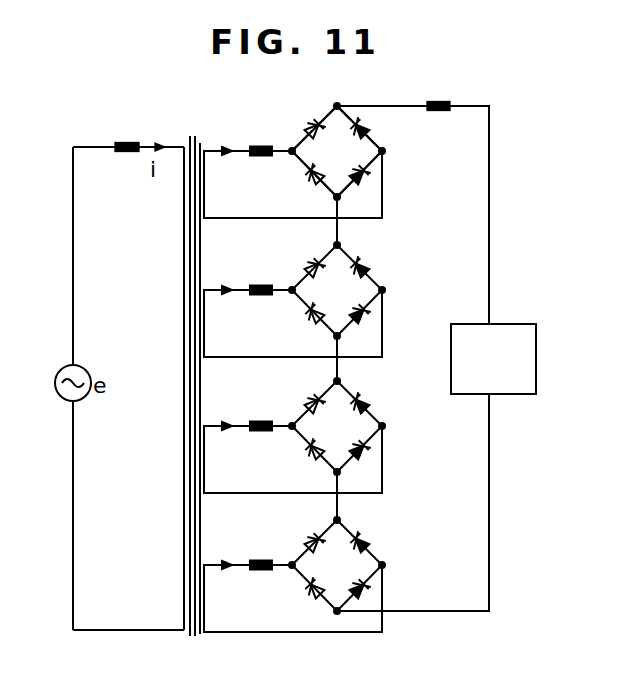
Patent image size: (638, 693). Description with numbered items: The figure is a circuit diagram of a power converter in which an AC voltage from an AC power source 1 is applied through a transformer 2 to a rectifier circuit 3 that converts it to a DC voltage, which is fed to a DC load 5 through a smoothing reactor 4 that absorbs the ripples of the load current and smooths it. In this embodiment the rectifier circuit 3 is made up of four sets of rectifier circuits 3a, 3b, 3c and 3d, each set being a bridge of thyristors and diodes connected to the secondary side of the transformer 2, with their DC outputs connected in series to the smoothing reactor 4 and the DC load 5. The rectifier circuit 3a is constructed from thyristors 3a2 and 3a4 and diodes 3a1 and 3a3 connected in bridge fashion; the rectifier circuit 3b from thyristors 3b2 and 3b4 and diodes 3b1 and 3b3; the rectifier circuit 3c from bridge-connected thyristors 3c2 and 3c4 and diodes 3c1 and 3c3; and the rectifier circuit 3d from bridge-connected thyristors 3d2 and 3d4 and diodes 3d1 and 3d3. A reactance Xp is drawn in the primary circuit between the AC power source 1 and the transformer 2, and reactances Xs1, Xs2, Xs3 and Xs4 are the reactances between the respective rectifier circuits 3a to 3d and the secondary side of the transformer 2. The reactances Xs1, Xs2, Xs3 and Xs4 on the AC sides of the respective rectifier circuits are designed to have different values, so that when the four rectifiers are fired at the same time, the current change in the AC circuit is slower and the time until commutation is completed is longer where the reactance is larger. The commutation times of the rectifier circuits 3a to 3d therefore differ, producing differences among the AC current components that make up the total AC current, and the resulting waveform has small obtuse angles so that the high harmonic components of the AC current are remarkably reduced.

The AC power source 1 is at (60, 371).
The transformer 2 is at (206, 136).
The rectifier circuit 3 is at (329, 99).
The rectifier circuit 3a is at (320, 566).
The rectifier circuit 3b is at (316, 429).
The rectifier circuit 3c is at (316, 293).
The rectifier circuit 3d is at (318, 149).
The diode 3a1 is at (364, 592).
The thyristor 3a2 is at (313, 595).
The diode 3a3 is at (367, 541).
The thyristor 3a4 is at (311, 535).
The diode 3b1 is at (362, 456).
The thyristor 3b2 is at (313, 456).
The diode 3b3 is at (367, 402).
The thyristor 3b4 is at (311, 396).
The diode 3c1 is at (362, 320).
The thyristor 3c2 is at (313, 320).
The diode 3c3 is at (367, 266).
The thyristor 3c4 is at (311, 260).
The diode 3d1 is at (362, 181).
The thyristor 3d2 is at (313, 181).
The diode 3d3 is at (367, 127).
The thyristor 3d4 is at (311, 121).
The smoothing reactor 4 is at (441, 103).
The DC load 5 is at (537, 338).
The primary reactance Xp is at (127, 143).
The reactance Xs1 is at (262, 560).
The reactance Xs2 is at (262, 421).
The reactance Xs3 is at (262, 285).
The reactance Xs4 is at (262, 146).